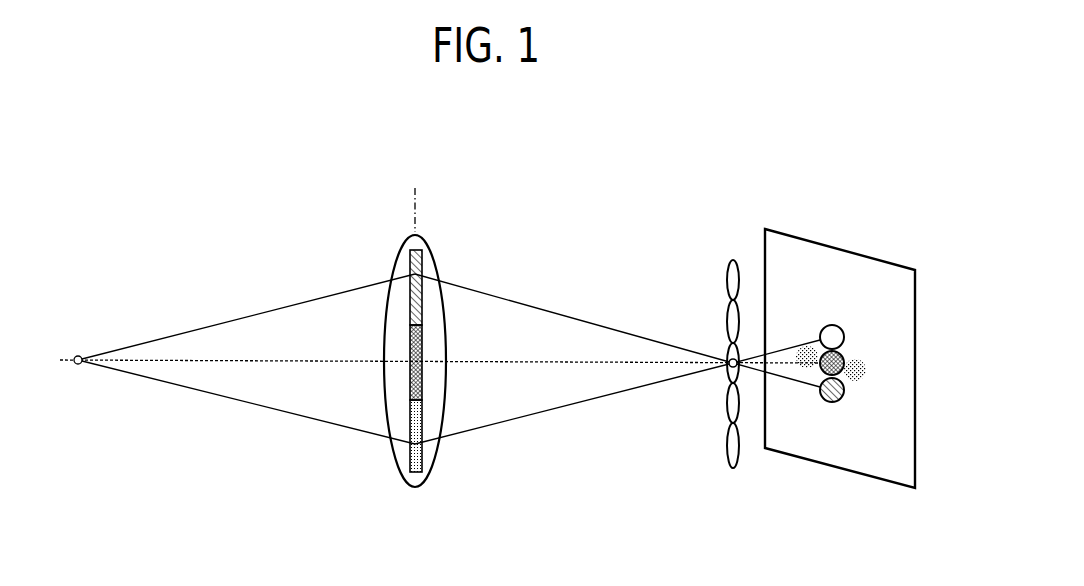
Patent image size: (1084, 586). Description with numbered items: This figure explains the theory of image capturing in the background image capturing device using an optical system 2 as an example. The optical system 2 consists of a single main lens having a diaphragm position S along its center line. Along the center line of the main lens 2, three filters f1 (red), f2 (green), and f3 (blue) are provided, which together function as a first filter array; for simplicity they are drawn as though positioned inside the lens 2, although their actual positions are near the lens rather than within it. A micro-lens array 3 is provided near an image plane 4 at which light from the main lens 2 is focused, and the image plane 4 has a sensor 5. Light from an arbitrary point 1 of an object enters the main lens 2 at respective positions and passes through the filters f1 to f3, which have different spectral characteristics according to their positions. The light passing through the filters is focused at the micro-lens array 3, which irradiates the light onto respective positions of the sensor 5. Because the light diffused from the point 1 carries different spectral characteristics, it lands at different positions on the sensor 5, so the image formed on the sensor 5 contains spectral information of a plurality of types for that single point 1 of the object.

The arbitrary point of an object 1 is at (83, 355).
The diaphragm position S is at (415, 197).
The optical system 2 is at (438, 269).
The filter (Red) f1 is at (409, 303).
The filter (Green) f2 is at (409, 368).
The filter (Blue) f3 is at (409, 452).
The micro-lens array 3 is at (727, 282).
The image plane 4 is at (856, 254).
The sensor 5 is at (851, 392).